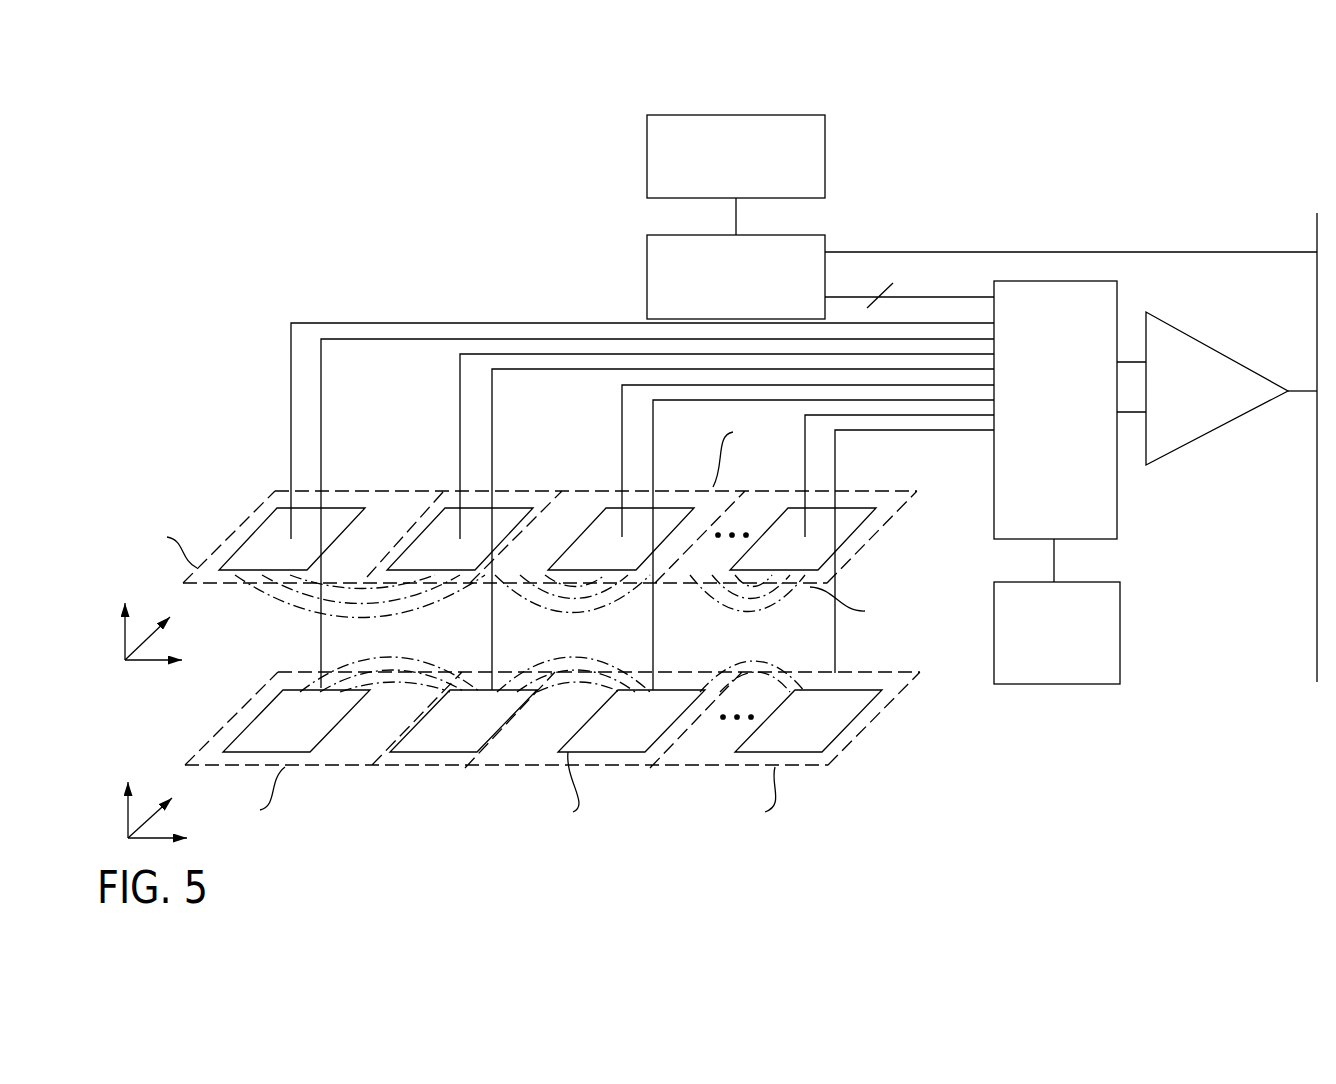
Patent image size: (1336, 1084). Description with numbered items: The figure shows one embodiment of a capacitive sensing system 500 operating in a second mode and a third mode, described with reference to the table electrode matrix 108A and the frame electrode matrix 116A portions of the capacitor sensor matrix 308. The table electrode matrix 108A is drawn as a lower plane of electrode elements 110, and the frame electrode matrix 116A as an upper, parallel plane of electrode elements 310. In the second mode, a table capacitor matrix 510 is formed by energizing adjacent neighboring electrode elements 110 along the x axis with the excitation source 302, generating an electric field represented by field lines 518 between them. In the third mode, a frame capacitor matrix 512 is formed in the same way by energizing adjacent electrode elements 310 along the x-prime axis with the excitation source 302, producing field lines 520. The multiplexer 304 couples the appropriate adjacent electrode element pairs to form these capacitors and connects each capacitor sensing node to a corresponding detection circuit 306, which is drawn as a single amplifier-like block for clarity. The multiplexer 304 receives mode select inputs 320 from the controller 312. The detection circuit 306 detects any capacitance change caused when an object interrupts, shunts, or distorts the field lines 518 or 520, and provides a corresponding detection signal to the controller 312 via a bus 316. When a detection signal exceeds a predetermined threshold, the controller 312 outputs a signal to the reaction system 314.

The capacitive sensing system 500 is at (962, 155).
The reaction system 314 is at (720, 186).
The controller 312 is at (720, 304).
The mode select inputs 320 is at (908, 297).
The multiplexer 304 is at (1039, 438).
The detection circuit 306 is at (1182, 403).
The capacitor sensor matrix 308 is at (1291, 393).
The bus 316 is at (1317, 596).
The excitation source 302 is at (1041, 676).
The frame capacitor matrix 512 is at (882, 542).
The frame electrode matrix 116A is at (220, 508).
The frame electrode elements 310 is at (887, 460).
The field lines 520 is at (333, 617).
The field lines 518 is at (397, 662).
The table capacitor matrix 510 is at (887, 728).
The table electrode matrix 108A is at (218, 727).
The table electrode elements 110 is at (293, 752).